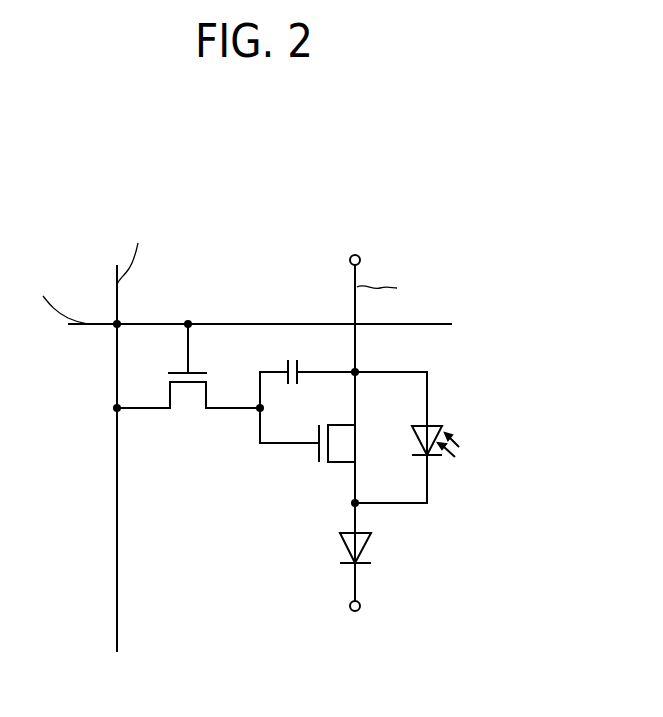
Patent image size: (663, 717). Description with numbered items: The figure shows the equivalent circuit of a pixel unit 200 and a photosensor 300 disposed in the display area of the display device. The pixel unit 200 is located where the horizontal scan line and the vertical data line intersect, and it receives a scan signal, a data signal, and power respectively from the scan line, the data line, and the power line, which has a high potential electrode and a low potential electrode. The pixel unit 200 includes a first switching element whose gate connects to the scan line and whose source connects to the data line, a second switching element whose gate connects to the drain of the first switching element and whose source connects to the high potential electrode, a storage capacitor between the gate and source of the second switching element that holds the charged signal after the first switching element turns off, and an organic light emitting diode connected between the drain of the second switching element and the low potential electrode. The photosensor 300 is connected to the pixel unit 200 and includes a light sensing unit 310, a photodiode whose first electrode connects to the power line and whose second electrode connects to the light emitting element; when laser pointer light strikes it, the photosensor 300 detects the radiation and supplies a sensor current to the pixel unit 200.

The pixel unit 200 is at (254, 293).
The photosensor 300 is at (473, 425).
The light sensing unit 310 is at (460, 452).